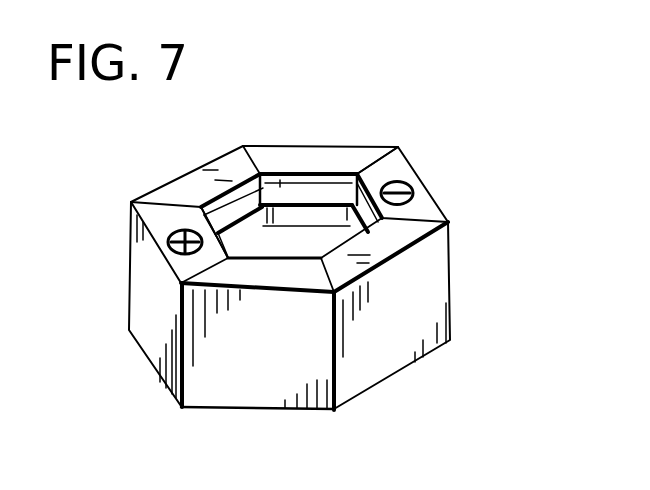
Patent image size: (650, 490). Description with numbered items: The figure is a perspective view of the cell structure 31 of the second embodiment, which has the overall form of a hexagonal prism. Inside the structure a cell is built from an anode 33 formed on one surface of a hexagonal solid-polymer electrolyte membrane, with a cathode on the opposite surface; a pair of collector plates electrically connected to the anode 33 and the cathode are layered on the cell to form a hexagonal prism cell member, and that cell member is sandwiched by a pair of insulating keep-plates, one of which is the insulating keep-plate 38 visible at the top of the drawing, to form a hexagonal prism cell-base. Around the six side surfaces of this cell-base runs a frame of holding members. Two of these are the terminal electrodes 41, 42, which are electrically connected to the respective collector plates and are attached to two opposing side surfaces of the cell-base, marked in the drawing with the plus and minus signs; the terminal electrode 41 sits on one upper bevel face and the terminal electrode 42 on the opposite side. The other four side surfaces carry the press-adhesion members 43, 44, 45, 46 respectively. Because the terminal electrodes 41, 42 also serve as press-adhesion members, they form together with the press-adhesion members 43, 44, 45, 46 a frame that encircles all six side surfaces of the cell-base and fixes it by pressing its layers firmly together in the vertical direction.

The cell structure 31 is at (472, 247).
The anode 33 is at (328, 238).
The insulating keep-plate 38 is at (281, 174).
The terminal electrode 41 is at (437, 197).
The terminal electrode 42 is at (143, 291).
The press-adhesion member 43 is at (330, 147).
The press-adhesion member 44 is at (245, 388).
The press-adhesion member 45 is at (202, 180).
The press-adhesion member 46 is at (390, 357).